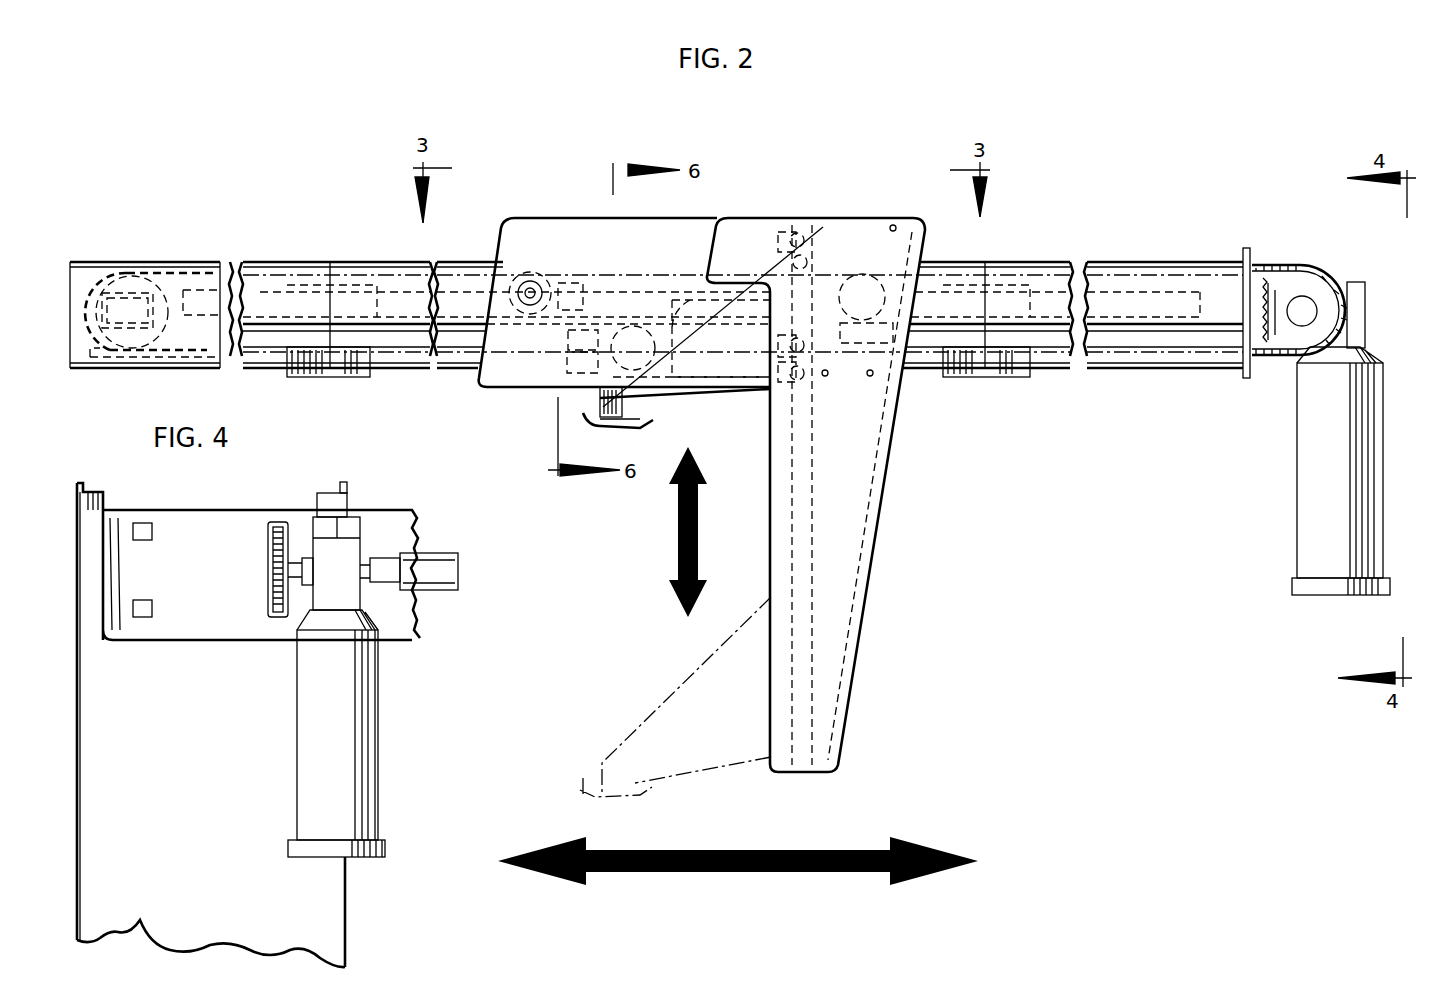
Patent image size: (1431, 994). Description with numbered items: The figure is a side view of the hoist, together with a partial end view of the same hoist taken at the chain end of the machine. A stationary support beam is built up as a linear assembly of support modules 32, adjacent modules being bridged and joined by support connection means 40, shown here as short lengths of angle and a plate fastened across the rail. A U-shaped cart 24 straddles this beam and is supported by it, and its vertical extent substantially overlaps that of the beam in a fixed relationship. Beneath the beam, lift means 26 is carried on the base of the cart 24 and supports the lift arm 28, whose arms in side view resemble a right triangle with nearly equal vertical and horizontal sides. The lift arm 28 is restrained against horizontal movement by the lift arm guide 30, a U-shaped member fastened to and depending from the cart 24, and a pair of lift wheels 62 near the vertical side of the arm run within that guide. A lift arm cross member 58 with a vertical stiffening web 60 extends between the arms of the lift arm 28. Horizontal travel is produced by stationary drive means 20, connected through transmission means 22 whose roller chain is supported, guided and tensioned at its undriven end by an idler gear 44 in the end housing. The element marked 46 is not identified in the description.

In FIG. 2, the stationary drive means 20 is at (1306, 435).
In FIG. 4, the stationary drive means 20 is at (372, 735).
In FIG. 2, the transmission means 22 is at (1282, 262).
In FIG. 4, the transmission means 22 is at (280, 527).
In FIG. 2, the cart 24 is at (503, 225).
In FIG. 2, the lift means 26 is at (633, 326).
In FIG. 2, the lift arm 28 is at (726, 334).
In FIG. 2, the lift arm guide 30 is at (745, 228).
In FIG. 2, the support module 32 is at (272, 266).
In FIG. 2, the support connection means 40 is at (335, 262).
In FIG. 2, the idler gear 44 is at (88, 313).
In FIG. 2, the bearing roller 46 is at (532, 276).
In FIG. 2, the lift arm cross member 58 is at (592, 423).
In FIG. 2, the vertical stiffening web 60 is at (652, 419).
In FIG. 2, the lift wheels 62 is at (818, 240).